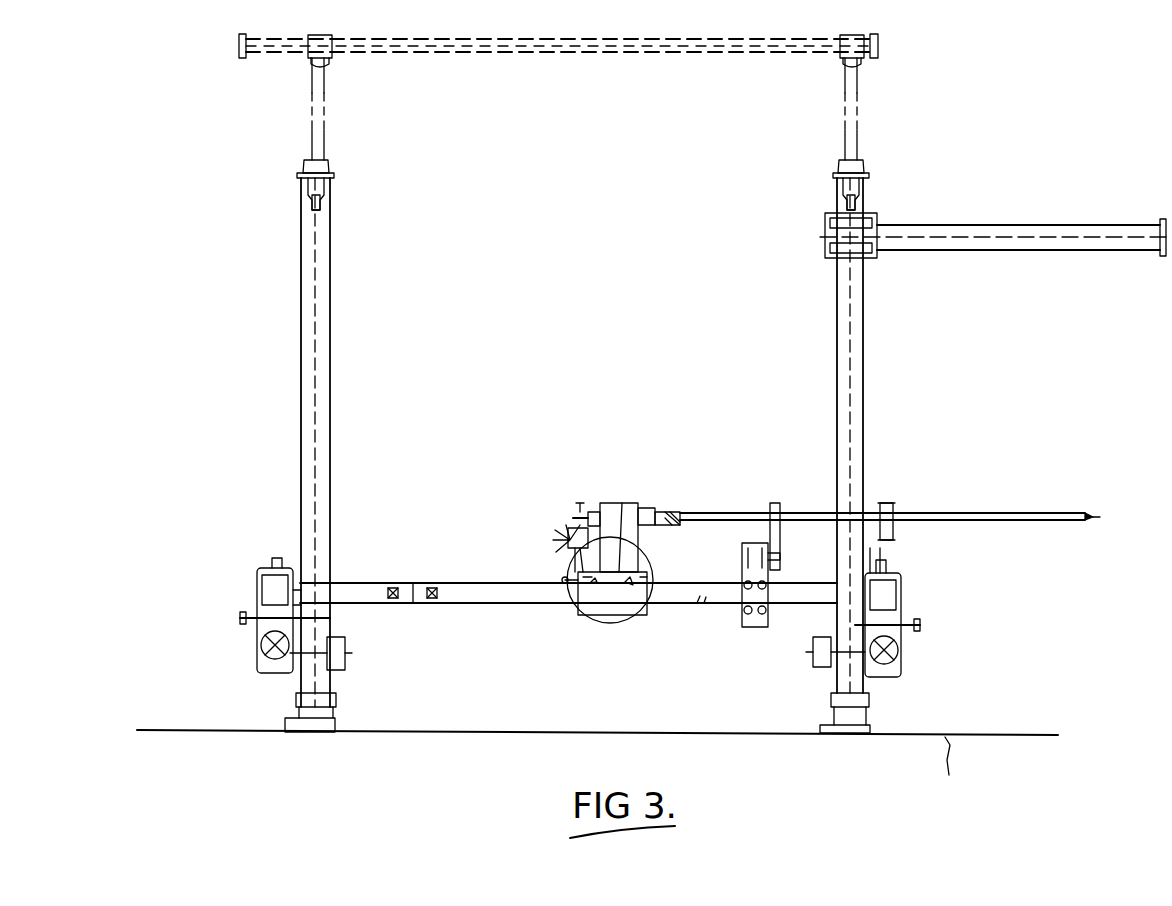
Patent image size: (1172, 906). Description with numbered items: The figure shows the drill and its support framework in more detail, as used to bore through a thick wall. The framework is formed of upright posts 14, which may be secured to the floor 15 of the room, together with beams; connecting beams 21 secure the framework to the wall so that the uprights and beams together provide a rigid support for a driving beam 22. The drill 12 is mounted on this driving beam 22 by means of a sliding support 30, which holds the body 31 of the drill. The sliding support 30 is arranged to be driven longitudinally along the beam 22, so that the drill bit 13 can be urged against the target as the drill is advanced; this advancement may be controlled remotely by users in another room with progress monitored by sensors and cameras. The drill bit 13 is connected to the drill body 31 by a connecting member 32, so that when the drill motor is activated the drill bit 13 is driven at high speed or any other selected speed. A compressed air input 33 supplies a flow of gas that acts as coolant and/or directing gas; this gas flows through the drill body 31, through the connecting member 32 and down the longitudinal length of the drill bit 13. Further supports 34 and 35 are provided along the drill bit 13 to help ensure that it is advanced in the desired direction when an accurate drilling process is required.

The drill 12 is at (588, 448).
The drill bit 13 is at (920, 513).
The upright posts 14 is at (300, 368).
The floor 15 is at (513, 733).
The connecting beam 21 is at (975, 225).
The driving beam 22 is at (487, 600).
The sliding support 30 is at (632, 617).
The drill body 31 is at (645, 503).
The connecting member 32 is at (673, 508).
The compressed air input 33 is at (655, 555).
The support 34 is at (790, 500).
The support 35 is at (885, 500).